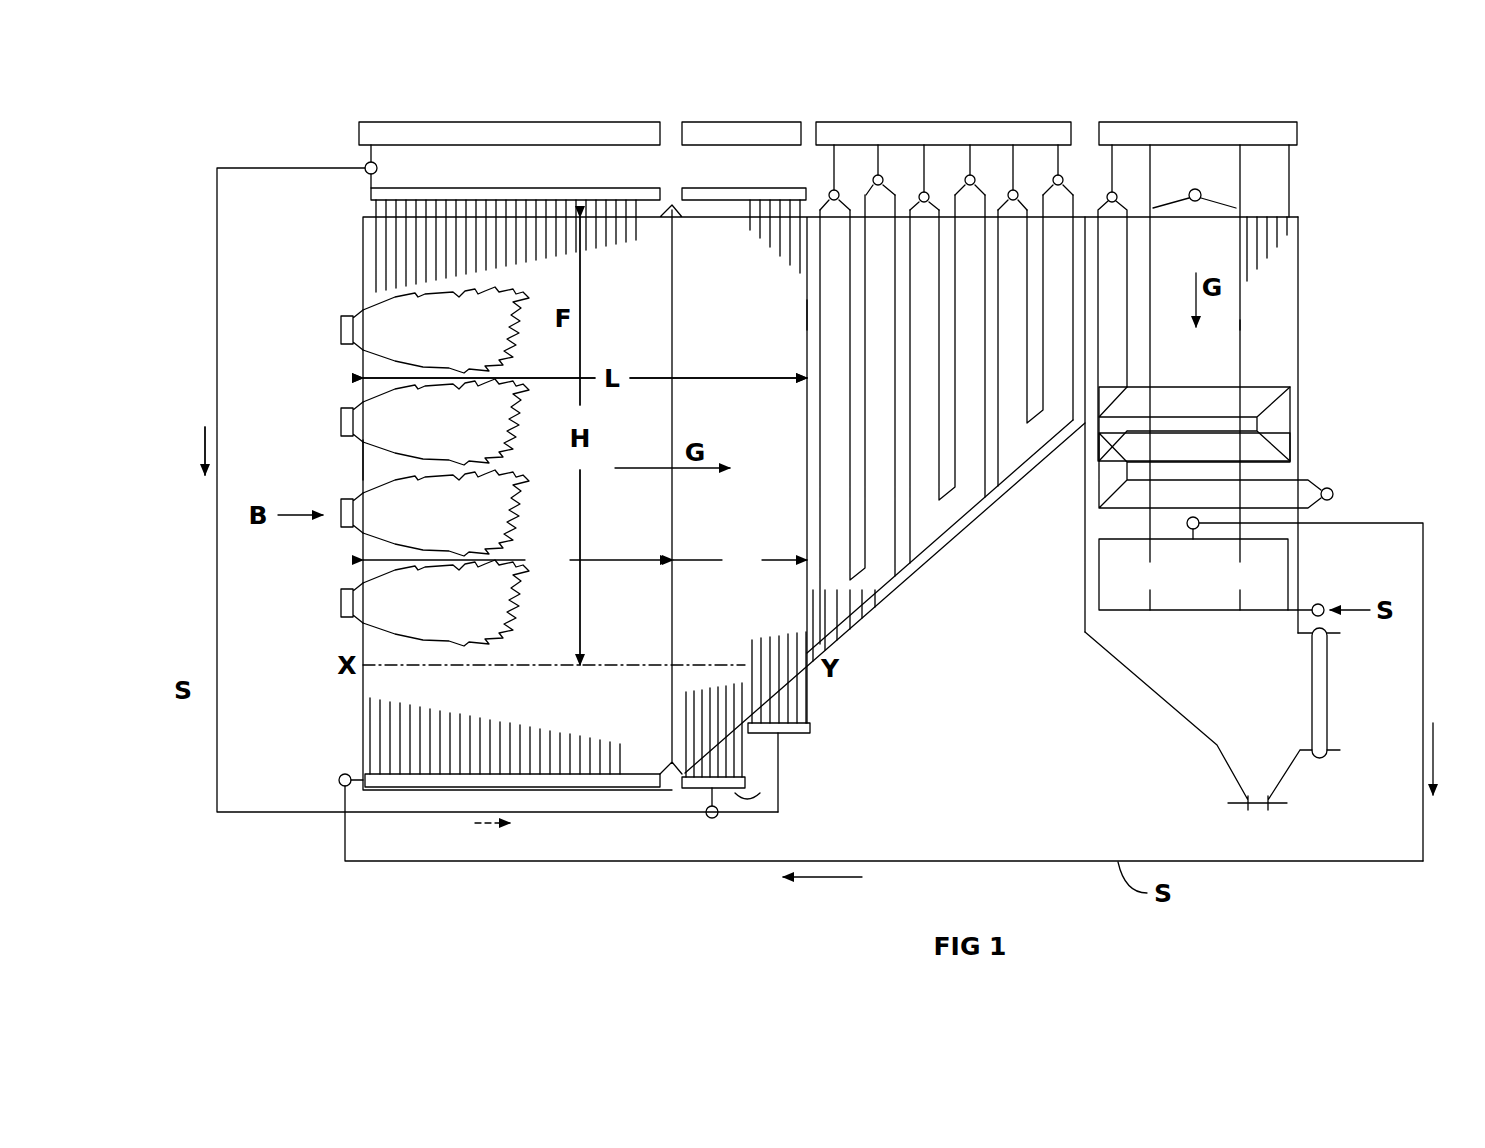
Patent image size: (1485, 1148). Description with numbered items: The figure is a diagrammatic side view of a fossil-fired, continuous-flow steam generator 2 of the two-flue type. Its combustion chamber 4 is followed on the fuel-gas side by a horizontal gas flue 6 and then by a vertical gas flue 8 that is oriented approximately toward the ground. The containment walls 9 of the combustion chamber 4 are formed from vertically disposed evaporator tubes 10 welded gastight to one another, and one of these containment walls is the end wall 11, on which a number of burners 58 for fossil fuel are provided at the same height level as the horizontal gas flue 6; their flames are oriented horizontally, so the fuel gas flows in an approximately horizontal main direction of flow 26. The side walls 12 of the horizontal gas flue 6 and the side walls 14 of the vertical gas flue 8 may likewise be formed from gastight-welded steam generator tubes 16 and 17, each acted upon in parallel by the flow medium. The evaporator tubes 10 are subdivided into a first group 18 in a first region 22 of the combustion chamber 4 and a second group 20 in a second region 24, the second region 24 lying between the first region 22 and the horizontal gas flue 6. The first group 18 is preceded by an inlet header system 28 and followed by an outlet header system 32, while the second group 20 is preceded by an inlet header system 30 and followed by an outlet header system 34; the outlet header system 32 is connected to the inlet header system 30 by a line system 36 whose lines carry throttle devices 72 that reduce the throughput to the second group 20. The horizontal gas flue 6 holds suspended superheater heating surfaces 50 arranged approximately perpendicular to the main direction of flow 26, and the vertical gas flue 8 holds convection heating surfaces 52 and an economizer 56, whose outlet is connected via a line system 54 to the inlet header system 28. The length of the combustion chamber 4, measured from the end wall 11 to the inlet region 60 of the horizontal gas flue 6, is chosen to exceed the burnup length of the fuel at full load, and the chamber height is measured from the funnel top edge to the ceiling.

The steam generator 2 is at (287, 267).
The combustion chamber 4 is at (405, 647).
The horizontal gas flue 6 is at (900, 562).
The vertical gas flue 8 is at (1275, 325).
The containment walls 9 is at (363, 548).
The evaporator tubes 10 is at (778, 228).
The end wall 11 is at (363, 462).
The side walls 12 is at (988, 472).
The side walls 14 is at (1290, 280).
The steam generator tubes 16 is at (850, 612).
The steam generator tubes 17 is at (1273, 232).
The first group 18 is at (407, 750).
The second group 20 is at (790, 698).
The first region 22 is at (517, 560).
The second region 24 is at (740, 560).
The main direction of flow 26 is at (650, 470).
The inlet header system 28 is at (573, 776).
The inlet header system 30 is at (793, 727).
The outlet header system 32 is at (378, 193).
The outlet header system 34 is at (748, 192).
The line system 36 is at (217, 648).
The superheater heating surfaces 50 is at (913, 210).
The convection heating surfaces 52 is at (1262, 395).
The line system 54 is at (1423, 655).
The economizer 56 is at (1270, 556).
The burners 58 is at (341, 422).
The inlet region 60 is at (807, 298).
The throttle devices 72 is at (742, 826).